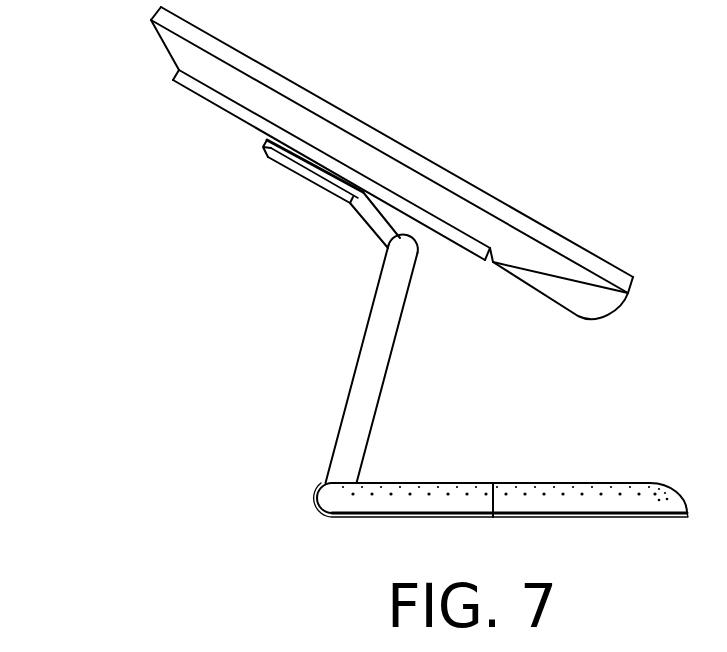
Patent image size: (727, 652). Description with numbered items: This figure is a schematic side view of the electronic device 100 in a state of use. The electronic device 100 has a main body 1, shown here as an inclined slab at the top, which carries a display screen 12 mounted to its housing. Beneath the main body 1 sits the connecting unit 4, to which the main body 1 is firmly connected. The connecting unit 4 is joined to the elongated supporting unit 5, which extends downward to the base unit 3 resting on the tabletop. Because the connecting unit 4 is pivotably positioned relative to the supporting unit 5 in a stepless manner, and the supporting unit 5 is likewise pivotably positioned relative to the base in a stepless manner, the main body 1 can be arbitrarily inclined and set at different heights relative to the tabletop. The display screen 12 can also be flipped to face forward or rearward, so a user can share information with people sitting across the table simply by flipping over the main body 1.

The electronic device 100 is at (146, 102).
The main body 1 is at (223, 52).
The display screen 12 is at (305, 88).
The connecting unit 4 is at (303, 170).
The supporting unit 5 is at (352, 427).
The base unit 3 is at (400, 502).